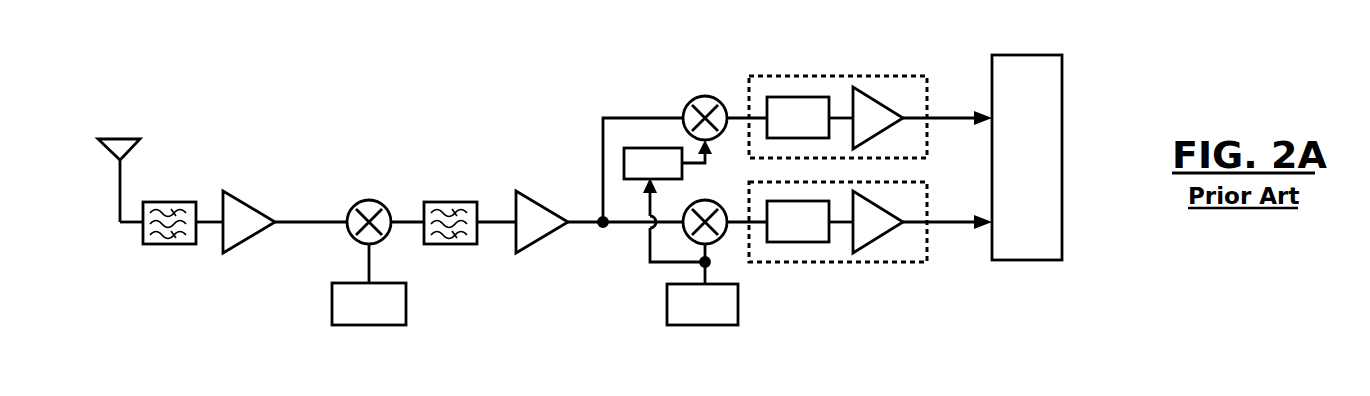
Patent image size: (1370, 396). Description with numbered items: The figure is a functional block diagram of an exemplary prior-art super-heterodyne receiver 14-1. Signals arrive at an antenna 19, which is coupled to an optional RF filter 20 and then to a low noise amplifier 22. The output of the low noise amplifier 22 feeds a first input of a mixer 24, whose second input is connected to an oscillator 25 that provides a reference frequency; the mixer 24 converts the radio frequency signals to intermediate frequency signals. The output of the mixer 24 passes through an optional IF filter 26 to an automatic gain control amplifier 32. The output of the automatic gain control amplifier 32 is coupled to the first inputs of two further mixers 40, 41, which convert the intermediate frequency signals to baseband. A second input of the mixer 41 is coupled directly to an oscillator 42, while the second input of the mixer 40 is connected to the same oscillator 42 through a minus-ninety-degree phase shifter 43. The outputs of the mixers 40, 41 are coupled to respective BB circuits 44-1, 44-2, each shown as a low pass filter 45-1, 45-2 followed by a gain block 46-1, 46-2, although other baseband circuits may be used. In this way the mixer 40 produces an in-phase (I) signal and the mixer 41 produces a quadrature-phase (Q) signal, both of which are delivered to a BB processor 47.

The super-heterodyne receiver 14-1 is at (306, 70).
The antenna 19 is at (128, 152).
The RF filter 20 is at (163, 244).
The low noise amplifier 22 is at (247, 202).
The mixer 24 is at (362, 198).
The oscillator 25 is at (406, 298).
The IF filter 26 is at (448, 202).
The automatic gain control amplifier 32 is at (543, 202).
The mixer 40 is at (685, 110).
The mixer 41 is at (712, 242).
The oscillator 42 is at (666, 313).
The −90° phase shifter 43 is at (682, 179).
The BB circuit 44-1 is at (792, 75).
The BB circuit 44-2 is at (927, 247).
The low pass filter 45-1 is at (802, 97).
The low pass filter 45-2 is at (798, 242).
The gain block 46-1 is at (883, 97).
The gain block 46-2 is at (875, 243).
The BB processor 47 is at (1062, 132).